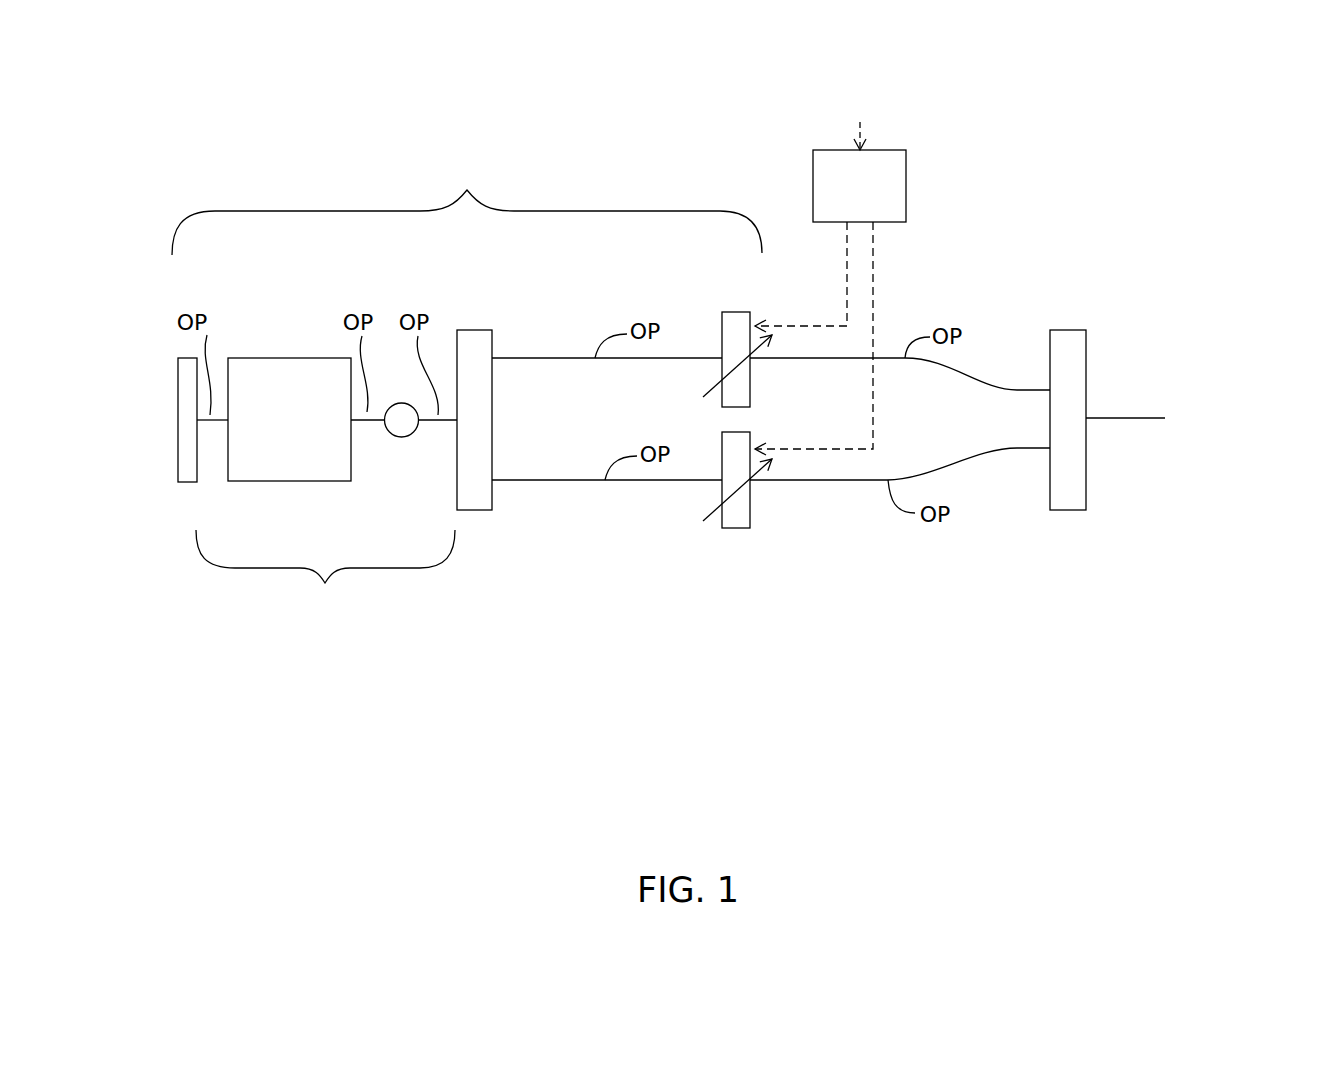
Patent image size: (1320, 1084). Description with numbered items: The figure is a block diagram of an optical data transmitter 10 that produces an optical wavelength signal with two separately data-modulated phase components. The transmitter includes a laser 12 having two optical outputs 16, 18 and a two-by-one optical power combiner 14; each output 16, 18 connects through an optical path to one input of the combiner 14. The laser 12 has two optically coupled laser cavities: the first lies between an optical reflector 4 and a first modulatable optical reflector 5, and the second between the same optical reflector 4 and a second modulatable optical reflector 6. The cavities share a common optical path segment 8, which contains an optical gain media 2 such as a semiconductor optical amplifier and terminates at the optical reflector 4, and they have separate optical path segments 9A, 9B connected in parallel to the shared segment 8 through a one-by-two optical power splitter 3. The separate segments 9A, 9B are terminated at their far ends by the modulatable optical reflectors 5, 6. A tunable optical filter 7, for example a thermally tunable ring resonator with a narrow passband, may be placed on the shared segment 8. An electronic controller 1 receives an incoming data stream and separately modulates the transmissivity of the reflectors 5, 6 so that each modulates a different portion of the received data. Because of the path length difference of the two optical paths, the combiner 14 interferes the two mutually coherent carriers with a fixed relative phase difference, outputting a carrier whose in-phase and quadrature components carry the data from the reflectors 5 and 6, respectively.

The electronic controller 1 is at (850, 195).
The optical gain media 2 is at (280, 433).
The 1×2 optical power splitter 3 is at (478, 343).
The optical reflector 4 is at (187, 483).
The first modulatable optical reflector 5 is at (735, 316).
The second modulatable optical reflector 6 is at (735, 516).
The tunable optical filter 7 is at (401, 437).
The shared optical path segment 8 is at (325, 574).
The first separate optical path segment 9A is at (613, 380).
The second separate optical path segment 9B is at (610, 532).
The optical data transmitter 10 is at (617, 708).
The laser 12 is at (467, 208).
The 2×1 optical power combiner 14 is at (1086, 510).
The first optical output 16 is at (751, 366).
The second optical output 18 is at (752, 482).